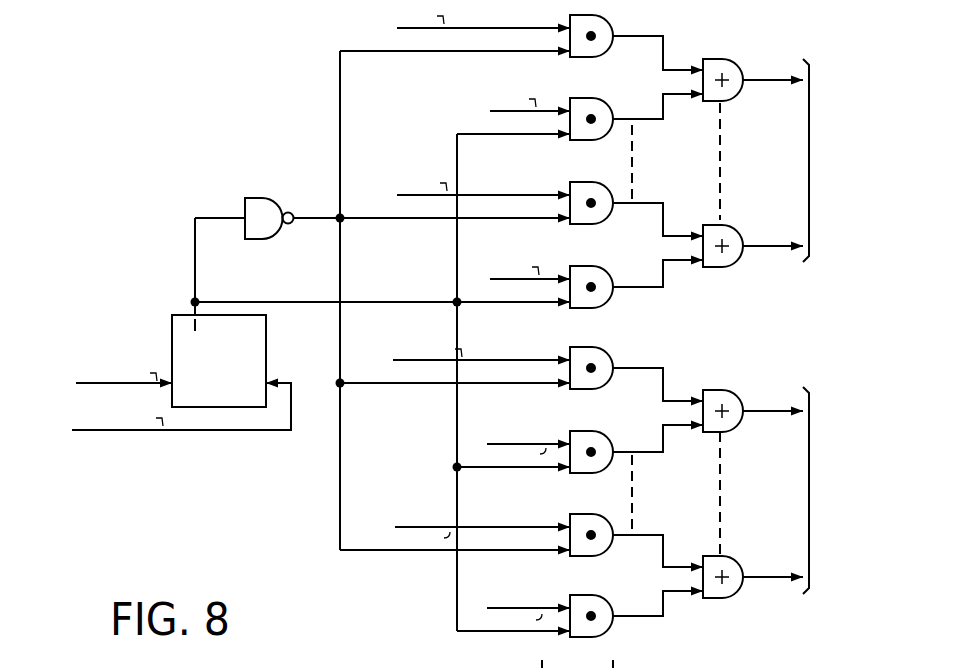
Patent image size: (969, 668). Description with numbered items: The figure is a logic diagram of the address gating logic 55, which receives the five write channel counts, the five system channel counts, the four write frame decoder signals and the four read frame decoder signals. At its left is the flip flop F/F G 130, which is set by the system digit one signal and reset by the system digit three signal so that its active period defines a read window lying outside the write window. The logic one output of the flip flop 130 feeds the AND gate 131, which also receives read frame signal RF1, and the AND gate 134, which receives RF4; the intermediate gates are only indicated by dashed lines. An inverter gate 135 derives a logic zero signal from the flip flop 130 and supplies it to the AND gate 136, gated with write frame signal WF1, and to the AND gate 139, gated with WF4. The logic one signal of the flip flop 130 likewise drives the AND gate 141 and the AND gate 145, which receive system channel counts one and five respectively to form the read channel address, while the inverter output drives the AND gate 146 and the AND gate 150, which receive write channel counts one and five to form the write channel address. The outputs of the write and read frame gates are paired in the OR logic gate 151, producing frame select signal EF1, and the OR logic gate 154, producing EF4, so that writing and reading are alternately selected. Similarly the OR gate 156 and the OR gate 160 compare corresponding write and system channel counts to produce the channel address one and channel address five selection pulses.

The address gating logic subsystem 55 is at (349, 581).
The flip flop F/F G 130 is at (267, 319).
The logic AND gate 131 is at (575, 141).
The logic AND gate 134 is at (575, 309).
The inverter gate 135 is at (276, 197).
The logic AND gate 136 is at (575, 58).
The logic AND gate 139 is at (575, 225).
The logic AND gate 141 is at (575, 474).
The logic AND gate 145 is at (606, 634).
The logic AND gate 146 is at (575, 390).
The logic AND gate 150 is at (575, 557).
The OR logic gate 151 is at (727, 60).
The OR logic gate 154 is at (727, 226).
The OR gate 156 is at (727, 391).
The OR gate 160 is at (727, 557).